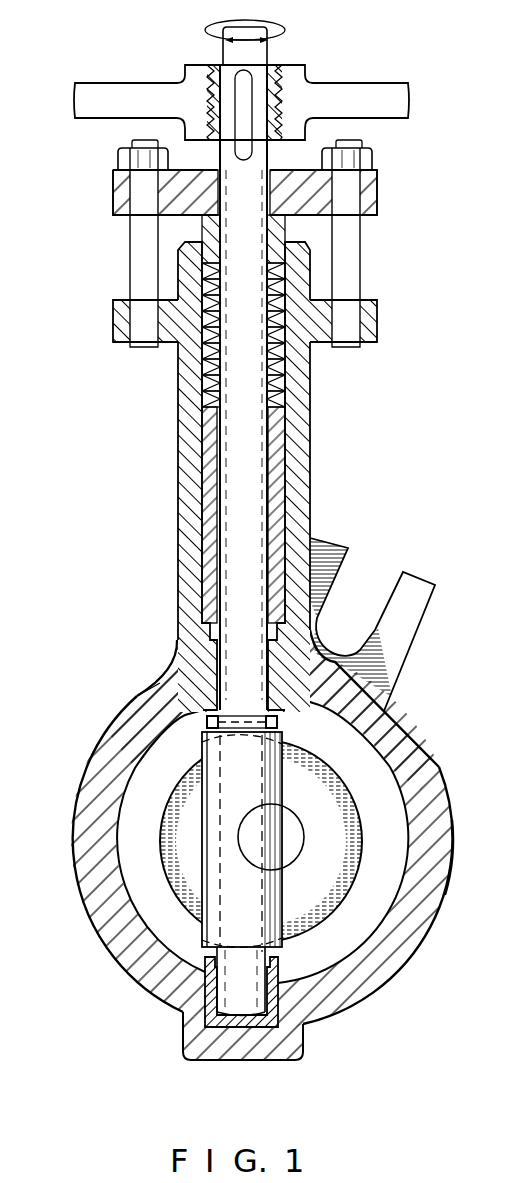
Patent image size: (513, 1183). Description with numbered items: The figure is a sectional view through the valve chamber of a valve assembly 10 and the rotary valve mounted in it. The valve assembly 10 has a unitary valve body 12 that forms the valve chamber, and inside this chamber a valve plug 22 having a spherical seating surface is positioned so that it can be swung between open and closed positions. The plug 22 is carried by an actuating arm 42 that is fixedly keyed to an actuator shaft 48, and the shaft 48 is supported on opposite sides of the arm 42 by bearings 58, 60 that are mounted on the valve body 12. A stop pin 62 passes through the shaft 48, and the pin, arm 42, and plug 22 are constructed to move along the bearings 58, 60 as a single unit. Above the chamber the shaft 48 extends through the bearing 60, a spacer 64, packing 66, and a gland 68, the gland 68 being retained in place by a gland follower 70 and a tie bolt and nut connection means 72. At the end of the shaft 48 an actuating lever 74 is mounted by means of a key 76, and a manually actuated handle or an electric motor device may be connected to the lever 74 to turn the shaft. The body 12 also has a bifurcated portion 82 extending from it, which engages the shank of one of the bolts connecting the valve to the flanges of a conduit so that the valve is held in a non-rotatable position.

The valve assembly 10 is at (68, 878).
The valve body 12 is at (447, 887).
The valve plug 22 is at (180, 832).
The actuating arm 42 is at (267, 927).
The actuator shaft 48 is at (253, 508).
The bearing 58 is at (214, 1006).
The bearing 60 is at (200, 695).
The stop pin 62 is at (207, 718).
The spacer 64 is at (290, 452).
The packing 66 is at (293, 280).
The gland 68 is at (282, 230).
The gland follower 70 is at (378, 197).
The tie bolt and nut connection means 72 is at (380, 158).
The actuating lever 74 is at (151, 95).
The key 76 is at (244, 92).
The bifurcated portion 82 is at (395, 652).